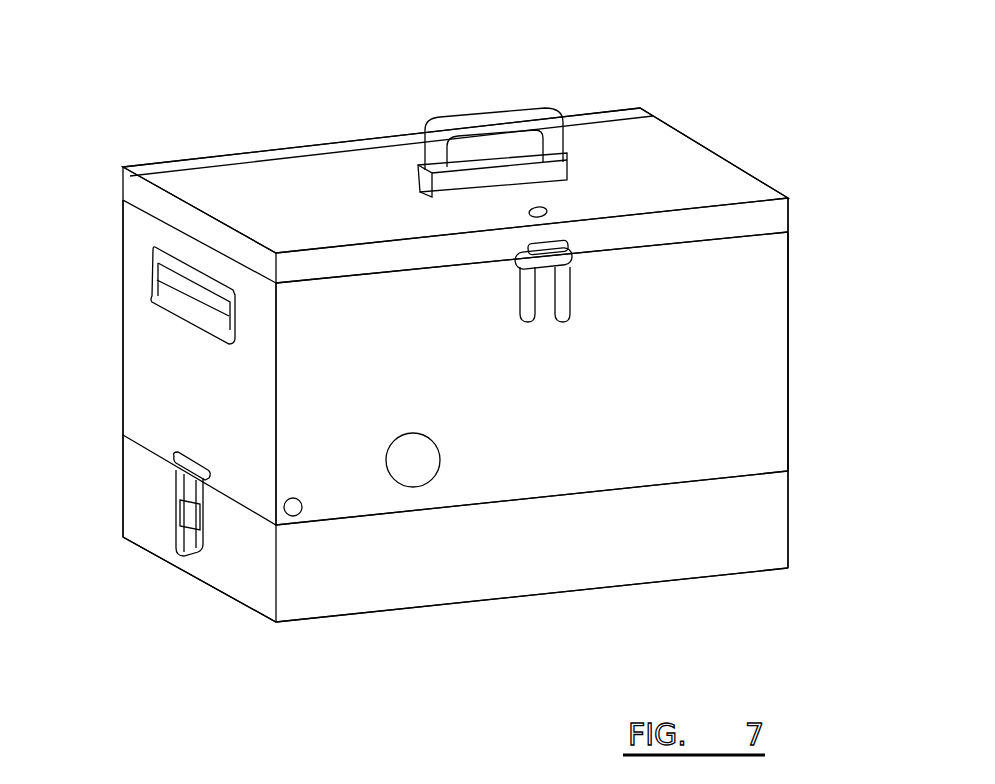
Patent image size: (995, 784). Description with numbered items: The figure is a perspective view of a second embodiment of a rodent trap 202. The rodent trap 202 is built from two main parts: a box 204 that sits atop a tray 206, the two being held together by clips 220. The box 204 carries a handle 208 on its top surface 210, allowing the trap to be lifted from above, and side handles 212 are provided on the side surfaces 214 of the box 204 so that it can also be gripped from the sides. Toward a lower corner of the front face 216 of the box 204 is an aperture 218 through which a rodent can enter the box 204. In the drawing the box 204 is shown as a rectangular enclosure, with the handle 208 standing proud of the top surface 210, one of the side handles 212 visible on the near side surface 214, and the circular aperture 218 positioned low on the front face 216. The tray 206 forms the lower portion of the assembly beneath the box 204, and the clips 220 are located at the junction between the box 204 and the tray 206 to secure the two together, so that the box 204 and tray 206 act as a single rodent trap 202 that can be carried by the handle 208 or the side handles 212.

The rodent trap 202 is at (738, 121).
The box 204 is at (685, 370).
The tray 206 is at (680, 545).
The handle 208 is at (505, 135).
The top surface 210 is at (345, 206).
The side handles 212 is at (185, 318).
The side surfaces 214 is at (205, 397).
The front face 216 is at (420, 355).
The aperture 218 is at (413, 462).
The clips 220 is at (183, 530).